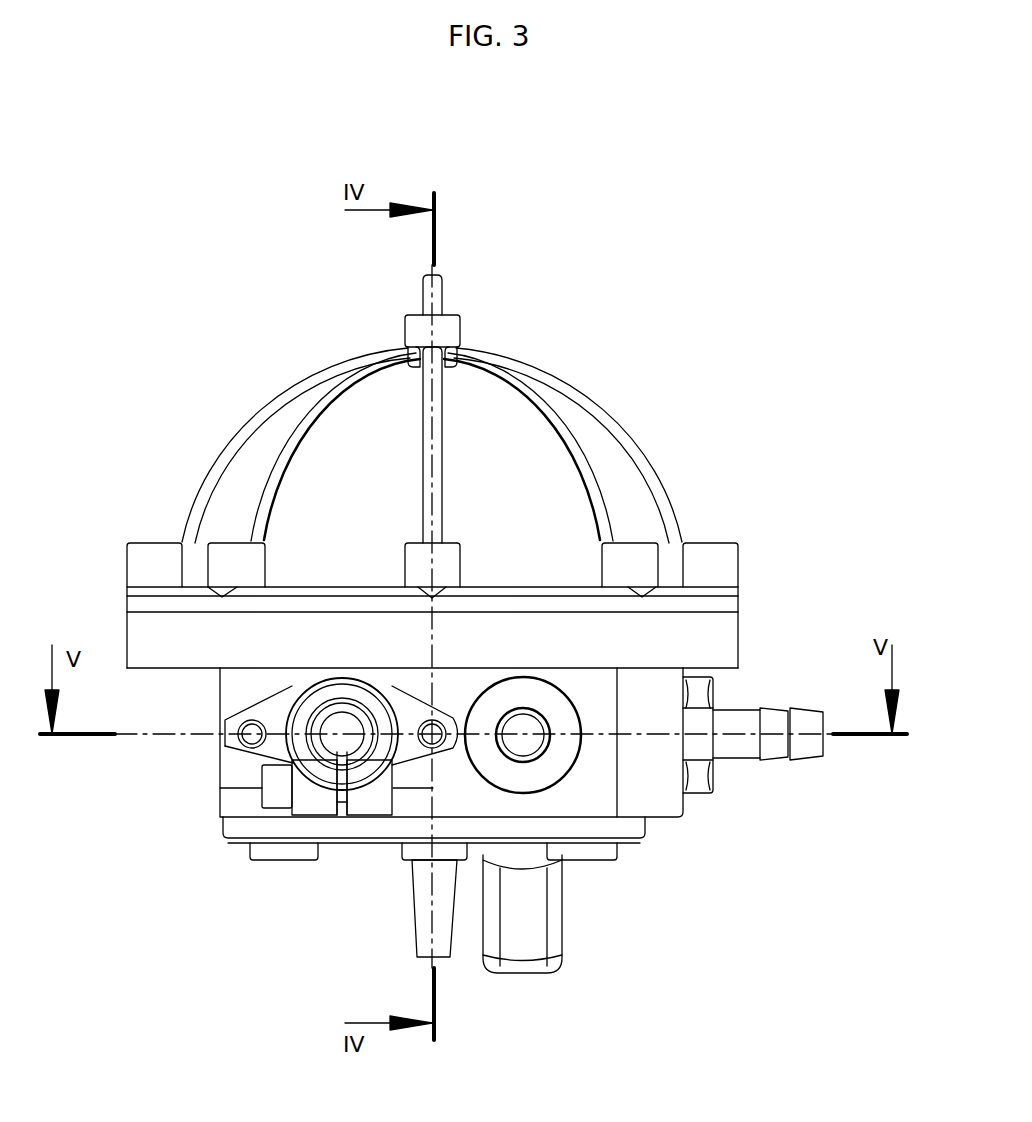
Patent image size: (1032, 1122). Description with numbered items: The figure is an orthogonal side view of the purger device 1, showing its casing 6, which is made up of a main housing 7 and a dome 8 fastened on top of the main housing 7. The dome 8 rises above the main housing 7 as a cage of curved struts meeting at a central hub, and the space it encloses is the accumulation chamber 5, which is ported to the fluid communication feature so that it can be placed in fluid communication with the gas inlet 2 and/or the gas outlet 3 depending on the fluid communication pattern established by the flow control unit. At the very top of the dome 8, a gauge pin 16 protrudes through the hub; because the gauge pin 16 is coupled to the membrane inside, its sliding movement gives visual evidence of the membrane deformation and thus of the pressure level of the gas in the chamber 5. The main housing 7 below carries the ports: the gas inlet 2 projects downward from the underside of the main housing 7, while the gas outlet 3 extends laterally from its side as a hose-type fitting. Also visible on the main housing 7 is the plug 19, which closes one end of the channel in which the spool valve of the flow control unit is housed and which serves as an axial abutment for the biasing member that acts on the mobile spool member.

The purger device 1 is at (678, 350).
The gas inlet 2 is at (418, 895).
The gas outlet 3 is at (772, 753).
The accumulation chamber 5 is at (507, 497).
The casing 6 is at (142, 528).
The main housing 7 is at (648, 800).
The dome 8 is at (262, 460).
The gauge pin 16 is at (441, 288).
The plug 19 is at (557, 767).